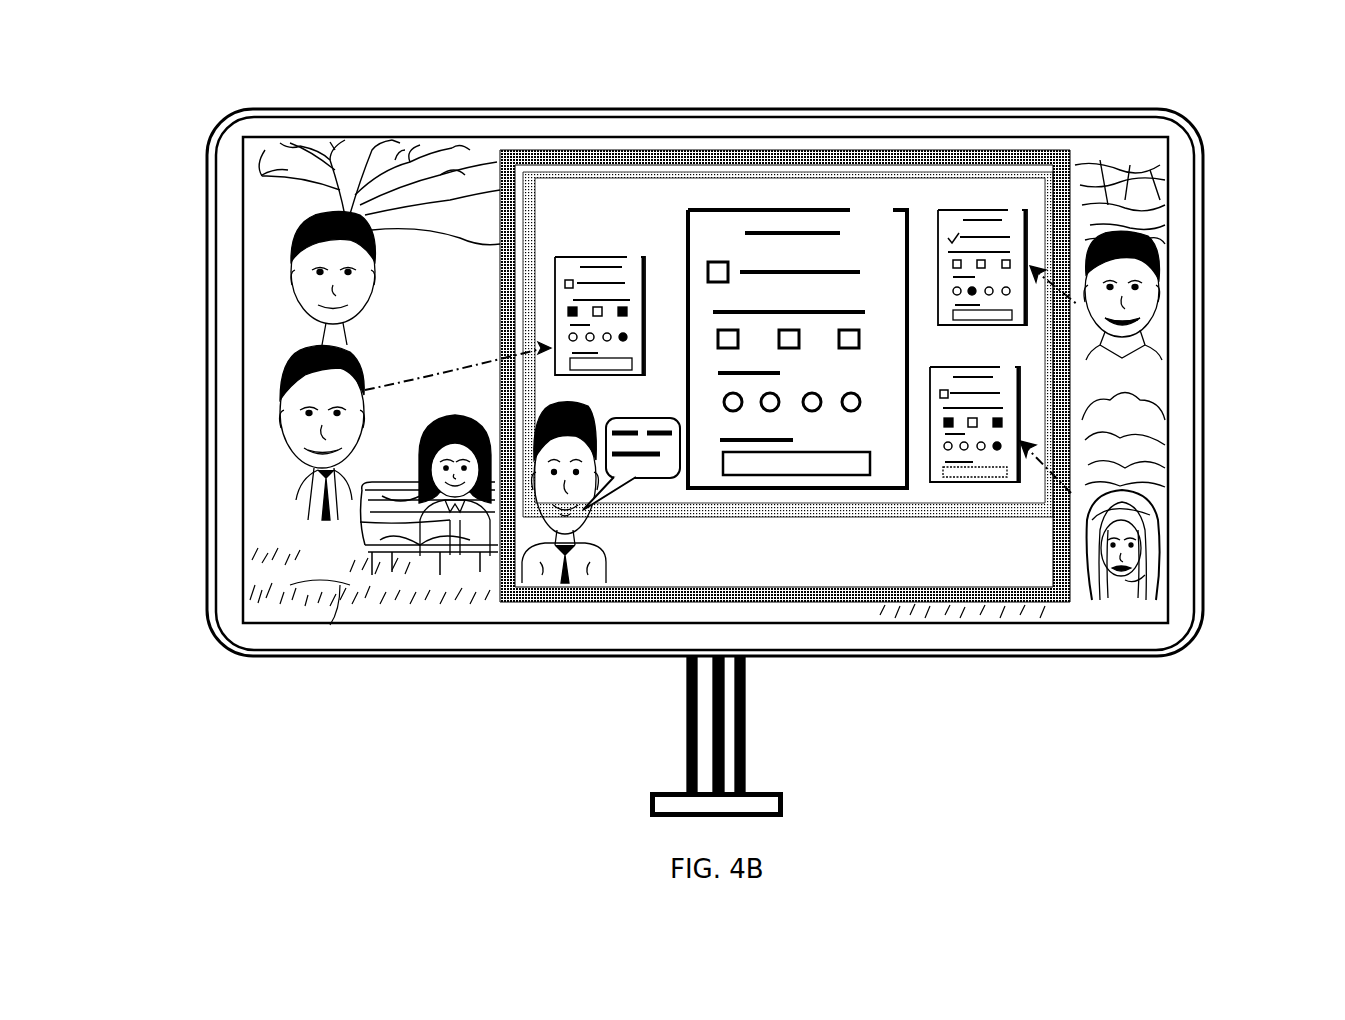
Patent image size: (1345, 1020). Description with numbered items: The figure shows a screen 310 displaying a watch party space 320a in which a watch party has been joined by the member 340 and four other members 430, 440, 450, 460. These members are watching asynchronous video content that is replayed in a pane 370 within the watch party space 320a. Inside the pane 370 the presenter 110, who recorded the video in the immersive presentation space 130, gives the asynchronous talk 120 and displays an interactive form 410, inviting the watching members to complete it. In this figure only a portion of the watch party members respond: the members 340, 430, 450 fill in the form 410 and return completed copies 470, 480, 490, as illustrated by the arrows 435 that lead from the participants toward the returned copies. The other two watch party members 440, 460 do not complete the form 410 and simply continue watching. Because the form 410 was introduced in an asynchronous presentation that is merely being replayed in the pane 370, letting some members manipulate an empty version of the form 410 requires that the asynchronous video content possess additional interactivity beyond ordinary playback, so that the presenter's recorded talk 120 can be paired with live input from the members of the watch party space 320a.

The screen 310 is at (213, 142).
The watch party space 320a is at (472, 335).
The immersive presentation space 130 is at (660, 223).
The pane 370 is at (912, 152).
The interactive form 410 is at (770, 208).
The completed copy 480 is at (980, 210).
The completed copy 490 is at (567, 257).
The completed copy 470 is at (975, 482).
The arrows 435 is at (1073, 495).
The presenter 110 is at (510, 565).
The asynchronous talk 120 is at (653, 480).
The watch party member 460 is at (283, 238).
The watch party member 450 is at (283, 393).
The watch party member 440 is at (380, 537).
The member 340 is at (1140, 322).
The watch party member 430 is at (1157, 540).